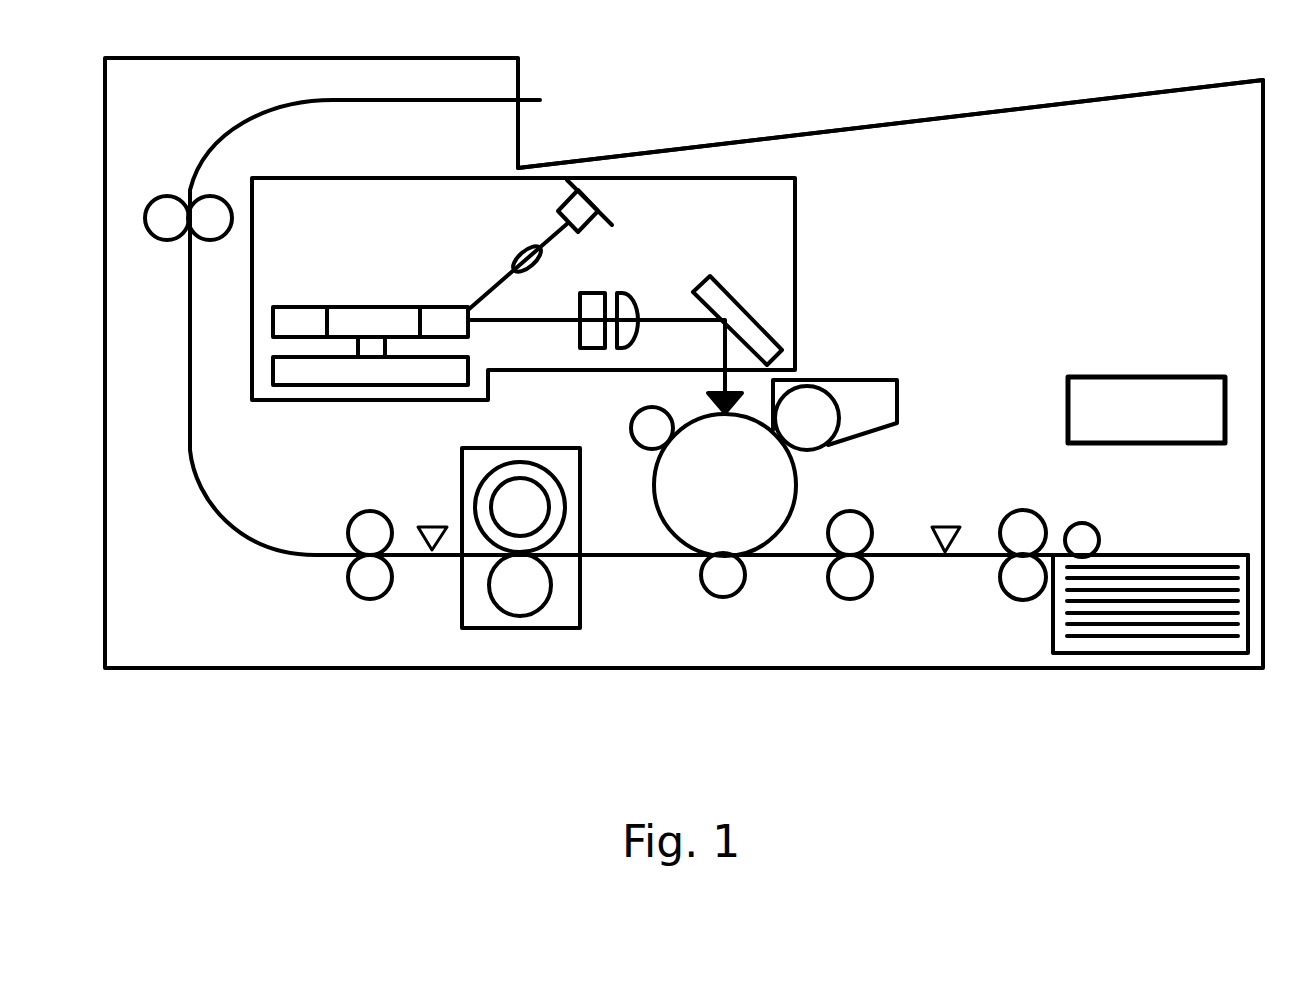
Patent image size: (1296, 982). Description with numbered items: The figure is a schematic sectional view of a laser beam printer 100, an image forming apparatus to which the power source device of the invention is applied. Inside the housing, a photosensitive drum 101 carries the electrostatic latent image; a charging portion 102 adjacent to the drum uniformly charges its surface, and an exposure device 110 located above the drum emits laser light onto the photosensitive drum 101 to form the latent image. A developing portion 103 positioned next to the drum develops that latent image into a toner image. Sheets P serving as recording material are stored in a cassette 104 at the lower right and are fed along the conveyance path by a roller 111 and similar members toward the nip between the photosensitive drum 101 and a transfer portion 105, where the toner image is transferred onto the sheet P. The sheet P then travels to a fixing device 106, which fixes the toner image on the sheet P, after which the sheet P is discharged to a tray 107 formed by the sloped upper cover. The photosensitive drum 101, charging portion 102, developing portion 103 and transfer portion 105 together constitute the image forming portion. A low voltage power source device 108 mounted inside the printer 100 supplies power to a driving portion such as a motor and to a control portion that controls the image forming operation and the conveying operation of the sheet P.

The laser beam printer 100 is at (688, 673).
The photosensitive drum 101 is at (655, 487).
The charging portion 102 is at (631, 430).
The developing portion 103 is at (900, 383).
The cassette 104 is at (1158, 552).
The transfer portion 105 is at (708, 600).
The fixing device 106 is at (462, 613).
The tray 107 is at (703, 140).
The low voltage power source device 108 is at (1133, 377).
The exposure device 110 is at (795, 267).
The roller 111 is at (1073, 530).
The sheet P is at (1148, 640).